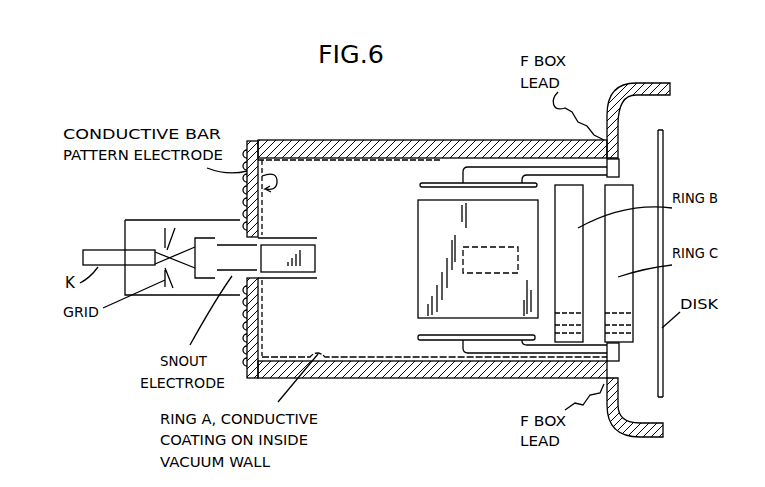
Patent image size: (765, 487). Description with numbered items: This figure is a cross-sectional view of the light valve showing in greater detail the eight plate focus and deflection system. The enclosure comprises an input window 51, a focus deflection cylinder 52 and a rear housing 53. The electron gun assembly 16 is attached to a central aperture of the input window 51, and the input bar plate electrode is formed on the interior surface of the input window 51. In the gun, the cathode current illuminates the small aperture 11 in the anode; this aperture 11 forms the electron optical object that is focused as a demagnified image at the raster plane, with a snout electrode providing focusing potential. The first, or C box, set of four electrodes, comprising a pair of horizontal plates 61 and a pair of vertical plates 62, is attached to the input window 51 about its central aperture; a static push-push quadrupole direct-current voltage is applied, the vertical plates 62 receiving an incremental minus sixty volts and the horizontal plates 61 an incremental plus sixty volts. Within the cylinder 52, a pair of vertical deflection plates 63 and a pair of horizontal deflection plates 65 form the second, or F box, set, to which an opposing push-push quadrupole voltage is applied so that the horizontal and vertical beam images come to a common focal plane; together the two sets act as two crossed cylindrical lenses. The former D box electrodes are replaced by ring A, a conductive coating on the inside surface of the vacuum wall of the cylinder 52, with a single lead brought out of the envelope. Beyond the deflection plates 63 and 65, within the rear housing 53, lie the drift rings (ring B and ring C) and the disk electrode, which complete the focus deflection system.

The electron gun assembly 16 is at (125, 221).
The input window 51 is at (250, 141).
The focus deflection cylinder 52 is at (393, 148).
The rear housing 53 is at (651, 82).
The horizontal plates 61 is at (306, 256).
The vertical plates 62 is at (317, 278).
The vertical deflection plates 63 is at (420, 187).
The horizontal deflection plates 65 is at (424, 219).
The aperture 11 is at (193, 258).